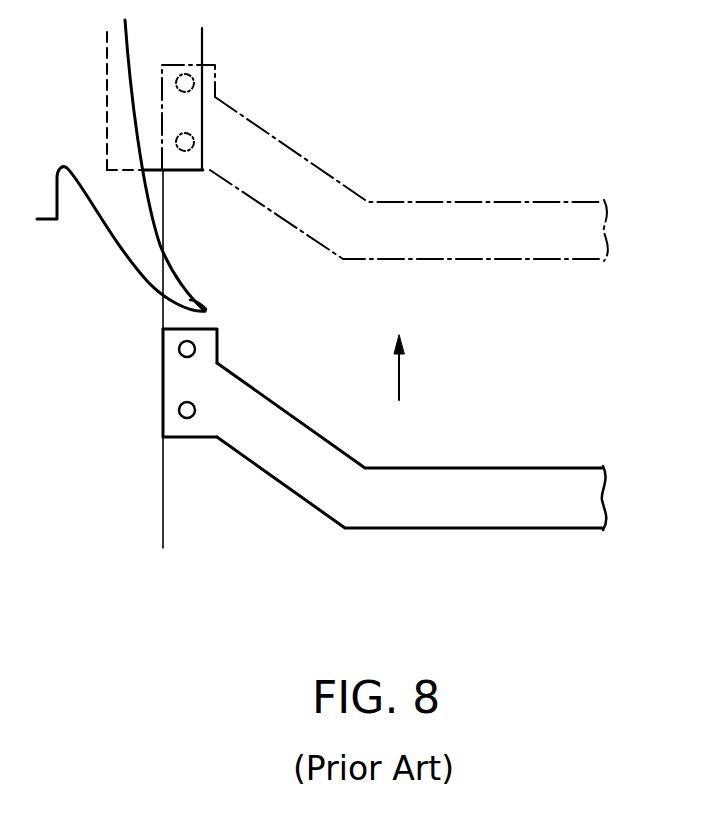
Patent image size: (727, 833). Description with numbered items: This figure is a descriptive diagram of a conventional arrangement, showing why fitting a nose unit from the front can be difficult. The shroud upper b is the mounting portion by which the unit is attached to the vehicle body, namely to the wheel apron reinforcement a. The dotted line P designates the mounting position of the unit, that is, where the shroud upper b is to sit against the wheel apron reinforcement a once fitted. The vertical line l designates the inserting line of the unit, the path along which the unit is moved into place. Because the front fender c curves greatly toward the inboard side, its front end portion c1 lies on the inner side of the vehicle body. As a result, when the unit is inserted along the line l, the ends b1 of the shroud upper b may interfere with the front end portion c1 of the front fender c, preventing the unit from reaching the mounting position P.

The wheel apron reinforcement a is at (190, 50).
The dotted line P is at (445, 202).
The front fender c is at (108, 222).
The front end portion of the front fender c1 is at (187, 295).
The ends of the shroud upper b1 is at (173, 370).
The shroud upper b is at (438, 517).
The vertical line l is at (162, 463).